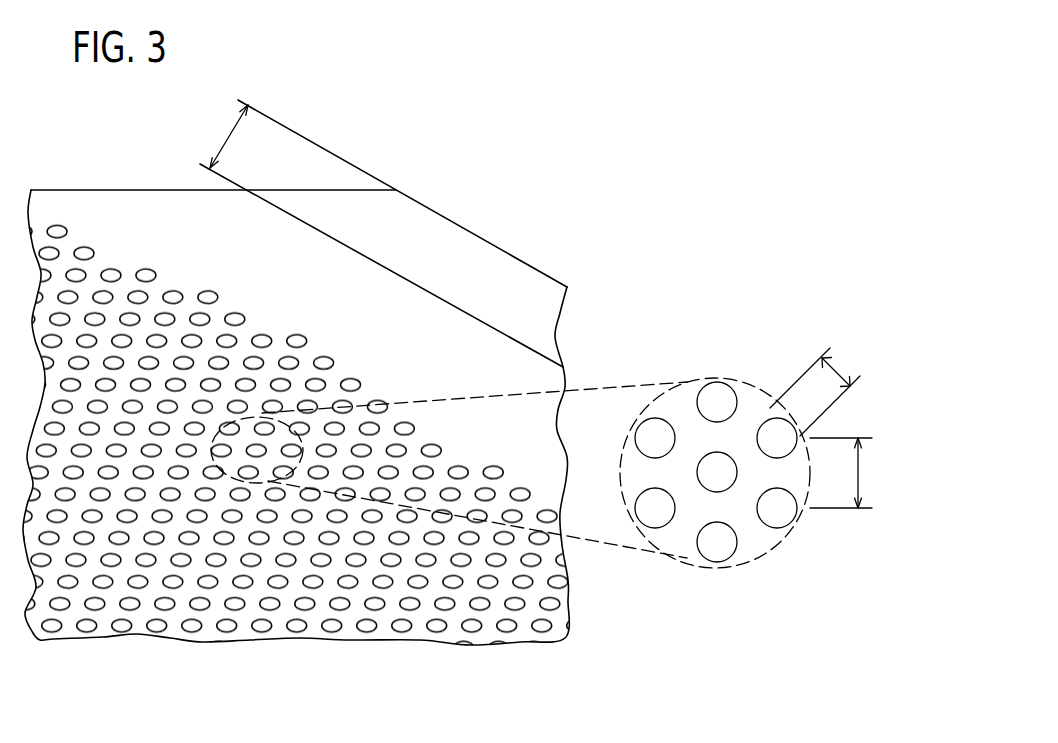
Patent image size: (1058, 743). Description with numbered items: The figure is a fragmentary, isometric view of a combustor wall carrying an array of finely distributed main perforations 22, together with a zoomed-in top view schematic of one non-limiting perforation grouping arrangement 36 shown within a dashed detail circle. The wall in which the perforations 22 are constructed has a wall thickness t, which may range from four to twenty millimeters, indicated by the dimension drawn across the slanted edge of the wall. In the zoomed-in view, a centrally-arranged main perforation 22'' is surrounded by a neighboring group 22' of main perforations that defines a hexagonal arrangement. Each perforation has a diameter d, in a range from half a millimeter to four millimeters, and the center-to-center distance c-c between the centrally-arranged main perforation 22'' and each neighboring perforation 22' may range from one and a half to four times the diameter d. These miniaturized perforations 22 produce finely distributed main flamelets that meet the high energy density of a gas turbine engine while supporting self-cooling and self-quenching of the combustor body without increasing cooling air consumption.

The perforations 22 is at (300, 449).
The neighboring group of main perforations 22' is at (716, 468).
The centrally-arranged main perforation 22'' is at (724, 457).
The perforation grouping arrangement 36 is at (761, 380).
The wall thickness t is at (229, 134).
The diameter d is at (840, 376).
The center-to-center distance c-c is at (859, 472).